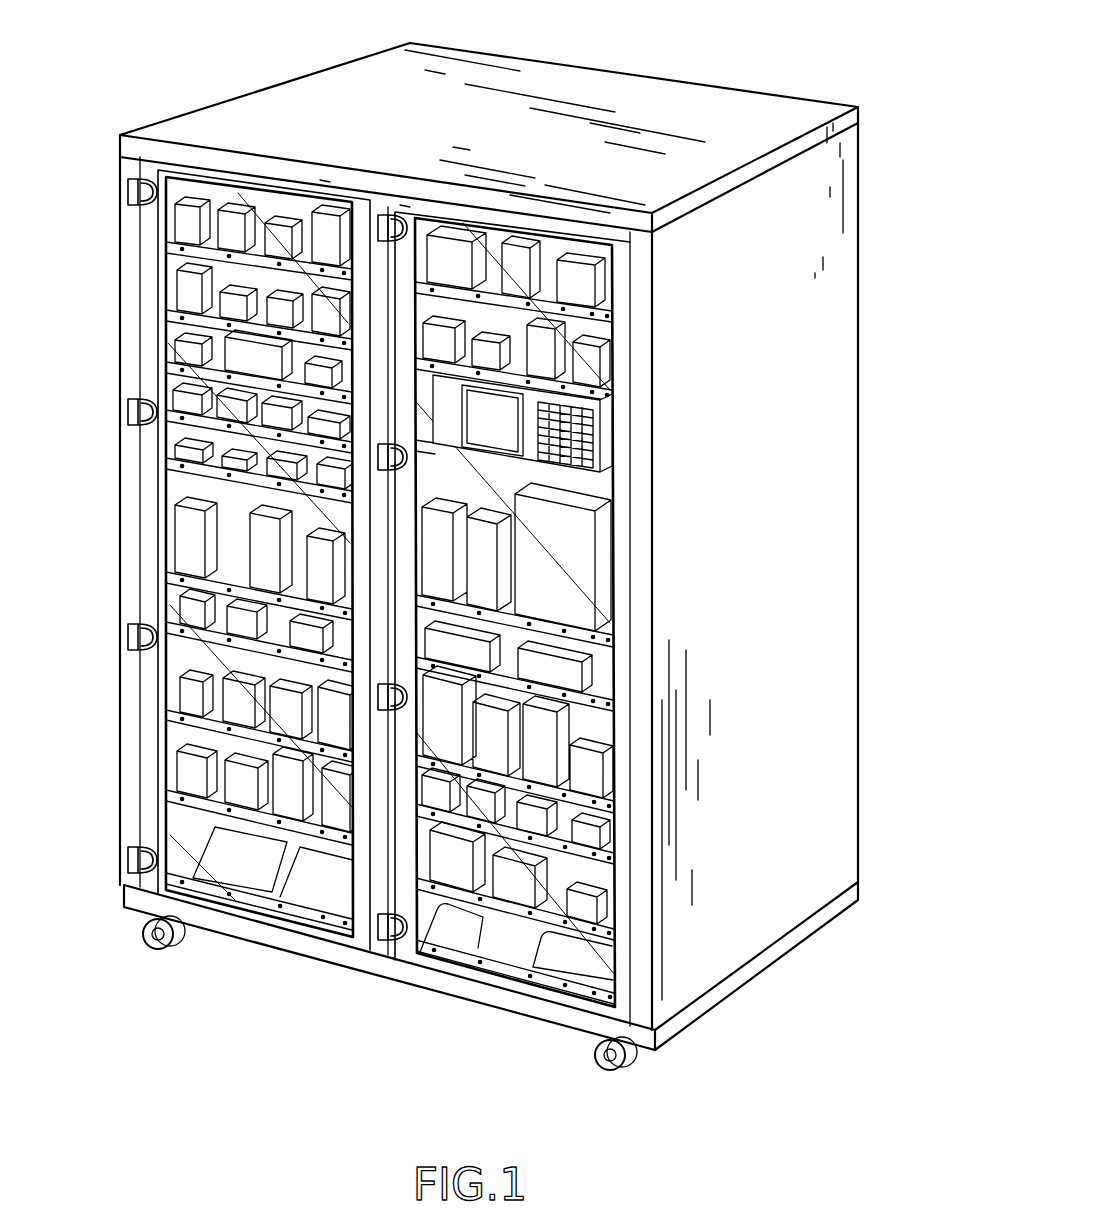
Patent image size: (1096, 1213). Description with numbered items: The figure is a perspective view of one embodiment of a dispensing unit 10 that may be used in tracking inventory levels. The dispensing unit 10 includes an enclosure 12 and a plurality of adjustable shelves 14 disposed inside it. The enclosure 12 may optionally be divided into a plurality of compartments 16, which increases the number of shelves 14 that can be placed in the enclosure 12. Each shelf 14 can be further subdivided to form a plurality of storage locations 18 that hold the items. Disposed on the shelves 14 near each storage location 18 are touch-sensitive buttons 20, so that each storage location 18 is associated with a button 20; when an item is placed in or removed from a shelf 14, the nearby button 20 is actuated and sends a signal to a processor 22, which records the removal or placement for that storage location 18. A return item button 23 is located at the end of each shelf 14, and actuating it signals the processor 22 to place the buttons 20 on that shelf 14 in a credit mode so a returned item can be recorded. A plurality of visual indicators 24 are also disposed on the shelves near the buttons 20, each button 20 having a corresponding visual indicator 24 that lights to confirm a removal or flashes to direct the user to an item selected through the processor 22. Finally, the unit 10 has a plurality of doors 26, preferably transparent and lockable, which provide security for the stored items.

The dispensing unit 10 is at (730, 35).
The enclosure 12 is at (128, 298).
The adjustable shelves 14 is at (170, 570).
The compartments 16 is at (452, 942).
The storage locations 18 is at (228, 708).
The touch-sensitive buttons 20 is at (592, 387).
The processor 22 is at (600, 432).
The return item button 23 is at (607, 390).
The visual indicators 24 is at (592, 312).
The doors 26 is at (408, 208).